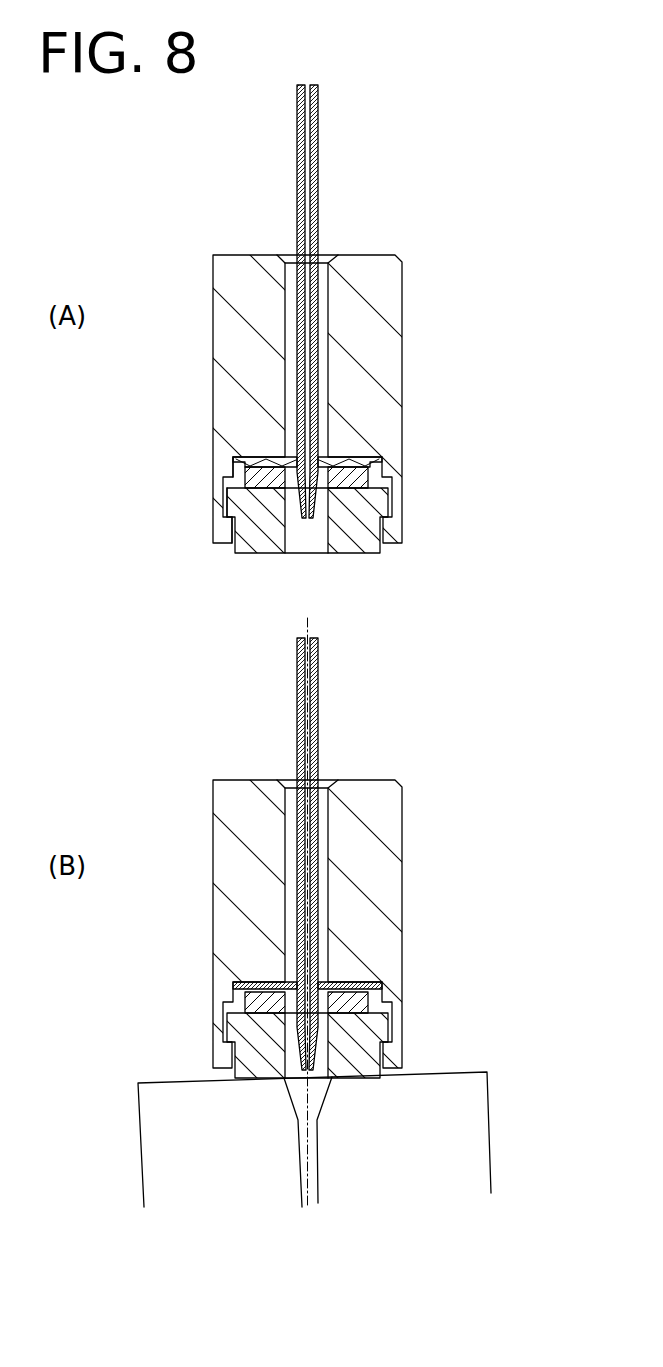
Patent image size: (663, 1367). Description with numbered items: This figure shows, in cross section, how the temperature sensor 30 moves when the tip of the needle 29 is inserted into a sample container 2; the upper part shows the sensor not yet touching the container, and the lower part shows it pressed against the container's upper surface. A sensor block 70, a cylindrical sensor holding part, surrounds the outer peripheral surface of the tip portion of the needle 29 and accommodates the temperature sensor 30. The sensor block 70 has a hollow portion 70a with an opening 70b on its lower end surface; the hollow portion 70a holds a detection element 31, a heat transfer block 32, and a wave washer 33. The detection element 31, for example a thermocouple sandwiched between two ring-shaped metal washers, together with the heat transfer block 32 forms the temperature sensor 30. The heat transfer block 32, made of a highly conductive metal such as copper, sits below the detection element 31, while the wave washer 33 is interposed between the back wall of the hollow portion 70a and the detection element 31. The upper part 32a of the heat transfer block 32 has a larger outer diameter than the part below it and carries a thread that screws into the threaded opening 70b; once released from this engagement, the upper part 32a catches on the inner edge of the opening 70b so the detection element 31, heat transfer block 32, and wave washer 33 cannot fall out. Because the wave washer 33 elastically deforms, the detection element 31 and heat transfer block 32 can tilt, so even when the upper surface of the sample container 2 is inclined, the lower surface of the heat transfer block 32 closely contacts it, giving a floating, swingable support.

The sample container 2 is at (473, 1106).
The needle 29 is at (317, 167).
The temperature sensor 30 is at (487, 453).
The detection element 31 is at (353, 477).
The heat transfer block 32 is at (365, 537).
The upper part of the heat transfer block 32a is at (227, 504).
The wave washer 33 is at (370, 465).
The sensor block 70 is at (402, 307).
The hollow portion 70a is at (238, 473).
The opening 70b is at (229, 533).